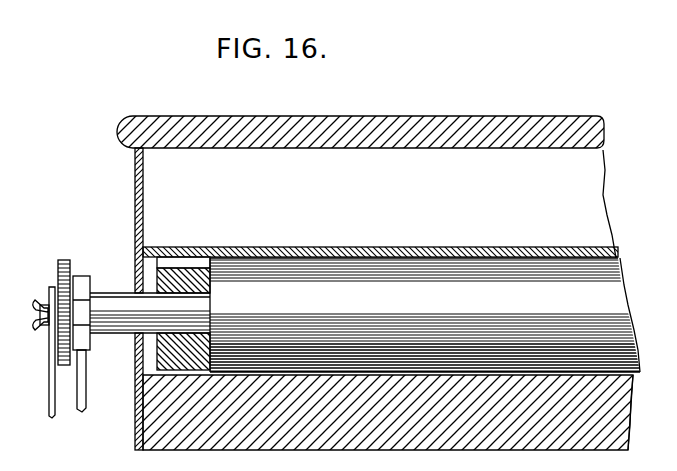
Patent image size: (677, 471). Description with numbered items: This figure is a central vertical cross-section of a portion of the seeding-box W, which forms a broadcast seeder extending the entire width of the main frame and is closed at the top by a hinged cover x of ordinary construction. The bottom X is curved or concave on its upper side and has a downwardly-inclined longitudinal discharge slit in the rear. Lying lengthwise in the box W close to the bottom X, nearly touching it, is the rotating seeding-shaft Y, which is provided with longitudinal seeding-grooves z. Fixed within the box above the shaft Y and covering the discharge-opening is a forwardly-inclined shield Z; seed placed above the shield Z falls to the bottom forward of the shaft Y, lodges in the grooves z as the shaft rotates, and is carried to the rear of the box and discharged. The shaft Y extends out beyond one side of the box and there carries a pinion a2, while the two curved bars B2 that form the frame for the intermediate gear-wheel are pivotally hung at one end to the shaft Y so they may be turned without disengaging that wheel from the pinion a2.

The hinged cover x is at (368, 132).
The seed-box W is at (127, 299).
The forwardly-inclined shield Z is at (380, 242).
The longitudinal seeding-grooves z is at (175, 263).
The rotating seeding-shaft Y is at (443, 315).
The bottom X is at (397, 412).
The pinion a2 is at (73, 303).
The curved bars B2 is at (49, 394).